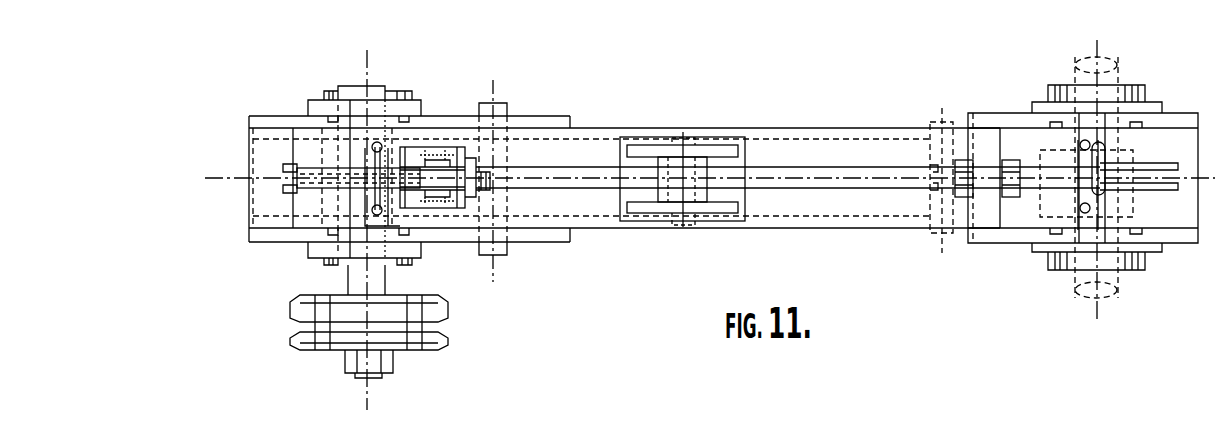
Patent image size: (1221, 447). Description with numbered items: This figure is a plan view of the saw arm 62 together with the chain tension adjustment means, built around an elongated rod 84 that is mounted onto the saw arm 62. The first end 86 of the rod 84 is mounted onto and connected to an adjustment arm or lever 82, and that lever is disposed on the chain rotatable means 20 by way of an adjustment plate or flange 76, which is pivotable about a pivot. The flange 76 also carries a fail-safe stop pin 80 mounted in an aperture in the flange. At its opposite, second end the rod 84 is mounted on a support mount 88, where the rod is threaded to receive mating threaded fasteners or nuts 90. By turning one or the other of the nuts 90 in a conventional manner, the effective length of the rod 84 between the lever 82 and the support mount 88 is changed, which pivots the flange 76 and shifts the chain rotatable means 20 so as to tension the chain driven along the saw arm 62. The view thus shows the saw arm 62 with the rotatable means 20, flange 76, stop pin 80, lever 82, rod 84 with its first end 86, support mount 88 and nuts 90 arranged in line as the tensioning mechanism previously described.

The chain rotatable means 20 is at (404, 360).
The saw arm 62 is at (642, 128).
The adjustment plate or flange 76 is at (557, 115).
The fail-safe stop pin 80 is at (502, 255).
The adjustment arm or lever 82 is at (307, 163).
The rod 84 is at (803, 167).
The first end of rod 86 is at (460, 208).
The support mount 88 is at (987, 150).
The nuts 90 is at (1010, 197).